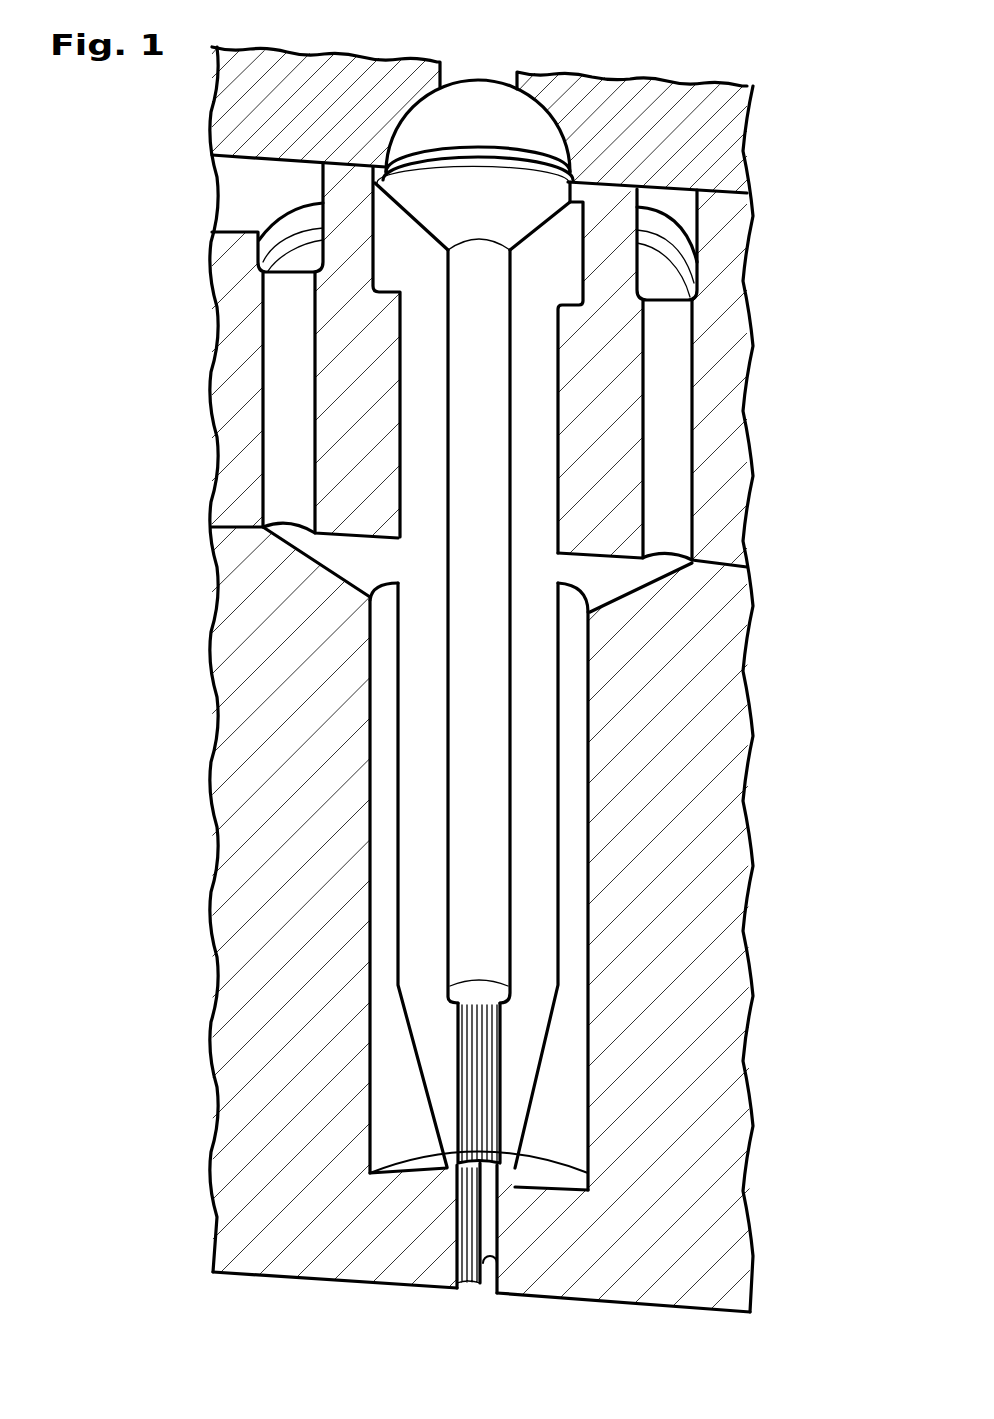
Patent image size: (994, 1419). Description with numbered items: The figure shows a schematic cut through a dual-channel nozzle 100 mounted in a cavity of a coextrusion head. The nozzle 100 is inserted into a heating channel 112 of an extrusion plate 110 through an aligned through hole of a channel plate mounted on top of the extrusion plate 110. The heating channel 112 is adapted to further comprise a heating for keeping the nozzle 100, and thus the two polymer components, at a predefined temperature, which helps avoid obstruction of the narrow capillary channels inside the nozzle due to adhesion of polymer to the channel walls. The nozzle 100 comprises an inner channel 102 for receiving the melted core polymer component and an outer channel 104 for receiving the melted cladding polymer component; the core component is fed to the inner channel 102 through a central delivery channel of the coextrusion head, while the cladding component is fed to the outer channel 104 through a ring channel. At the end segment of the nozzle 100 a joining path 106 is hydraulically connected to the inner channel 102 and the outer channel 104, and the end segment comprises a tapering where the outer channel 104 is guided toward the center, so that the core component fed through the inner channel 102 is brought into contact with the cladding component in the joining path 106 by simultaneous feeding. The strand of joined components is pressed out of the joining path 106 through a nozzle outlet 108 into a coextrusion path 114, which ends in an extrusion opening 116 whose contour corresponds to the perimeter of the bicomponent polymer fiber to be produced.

The dual-channel nozzle 100 is at (563, 732).
The inner channel 102 is at (479, 621).
The outer channel 104 is at (420, 827).
The joining path 106 is at (502, 1093).
The nozzle outlet 108 is at (458, 1168).
The extrusion plate 110 is at (697, 973).
The heating channel 112 is at (400, 1127).
The coextrusion path 114 is at (500, 1242).
The extrusion opening 116 is at (478, 1292).